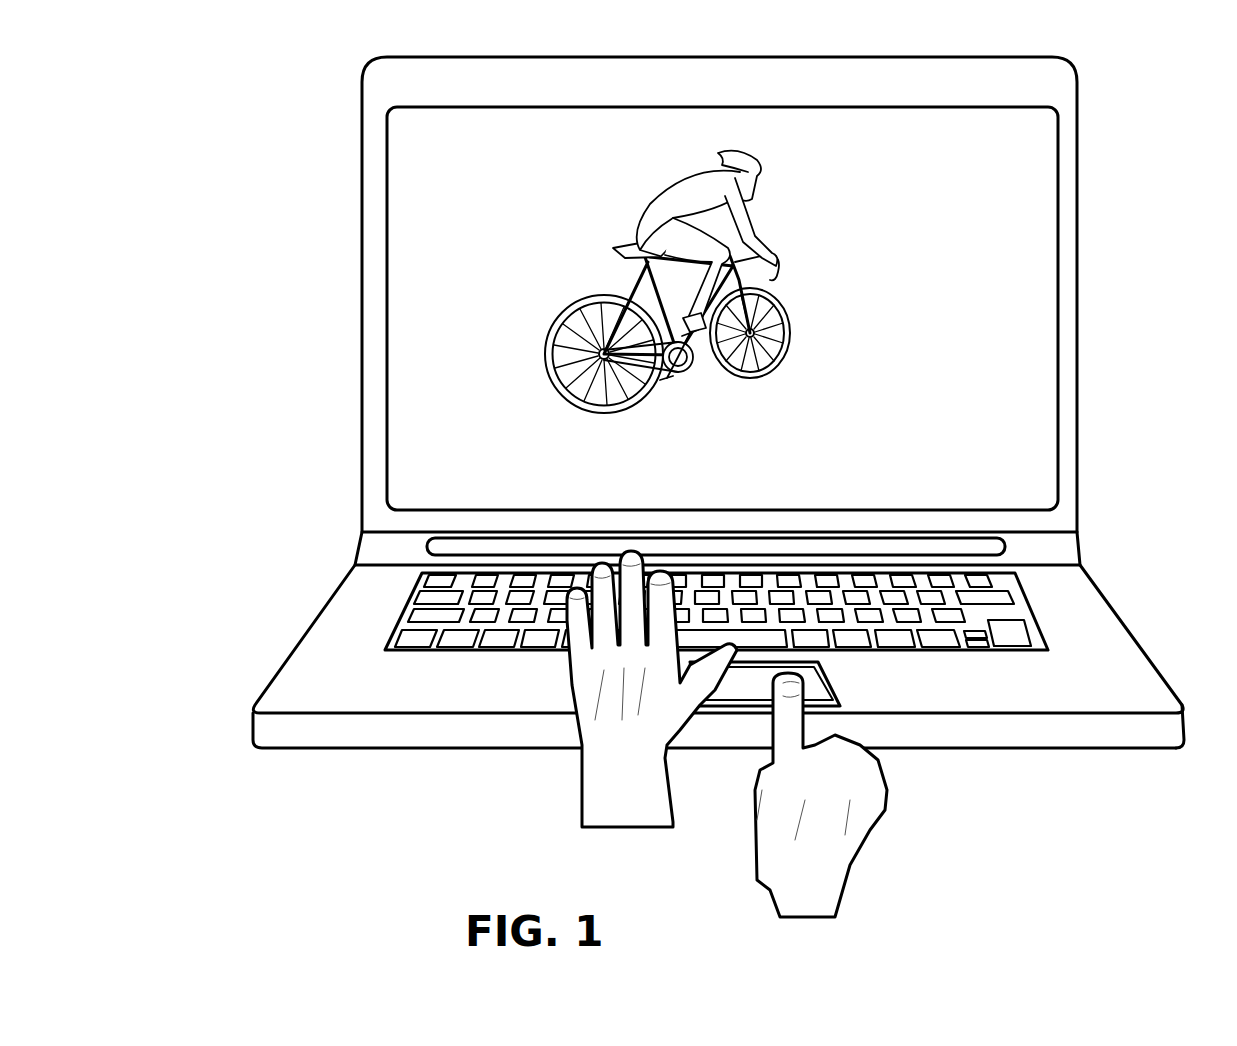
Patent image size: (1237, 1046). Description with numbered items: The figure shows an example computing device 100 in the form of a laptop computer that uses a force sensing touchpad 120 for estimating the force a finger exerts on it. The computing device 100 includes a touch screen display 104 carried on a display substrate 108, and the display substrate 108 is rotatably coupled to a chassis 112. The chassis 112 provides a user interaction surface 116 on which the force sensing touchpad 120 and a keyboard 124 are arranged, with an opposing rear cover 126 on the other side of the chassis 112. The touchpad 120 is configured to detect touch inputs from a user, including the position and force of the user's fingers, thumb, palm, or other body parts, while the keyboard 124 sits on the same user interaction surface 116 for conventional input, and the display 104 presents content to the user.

The computing device 100 is at (276, 138).
The touch screen display 104 is at (985, 196).
The display substrate 108 is at (362, 172).
The chassis 112 is at (1174, 691).
The user interaction surface 116 is at (272, 704).
The force sensing touchpad 120 is at (722, 690).
The keyboard 124 is at (378, 586).
The rear cover 126 is at (1127, 752).